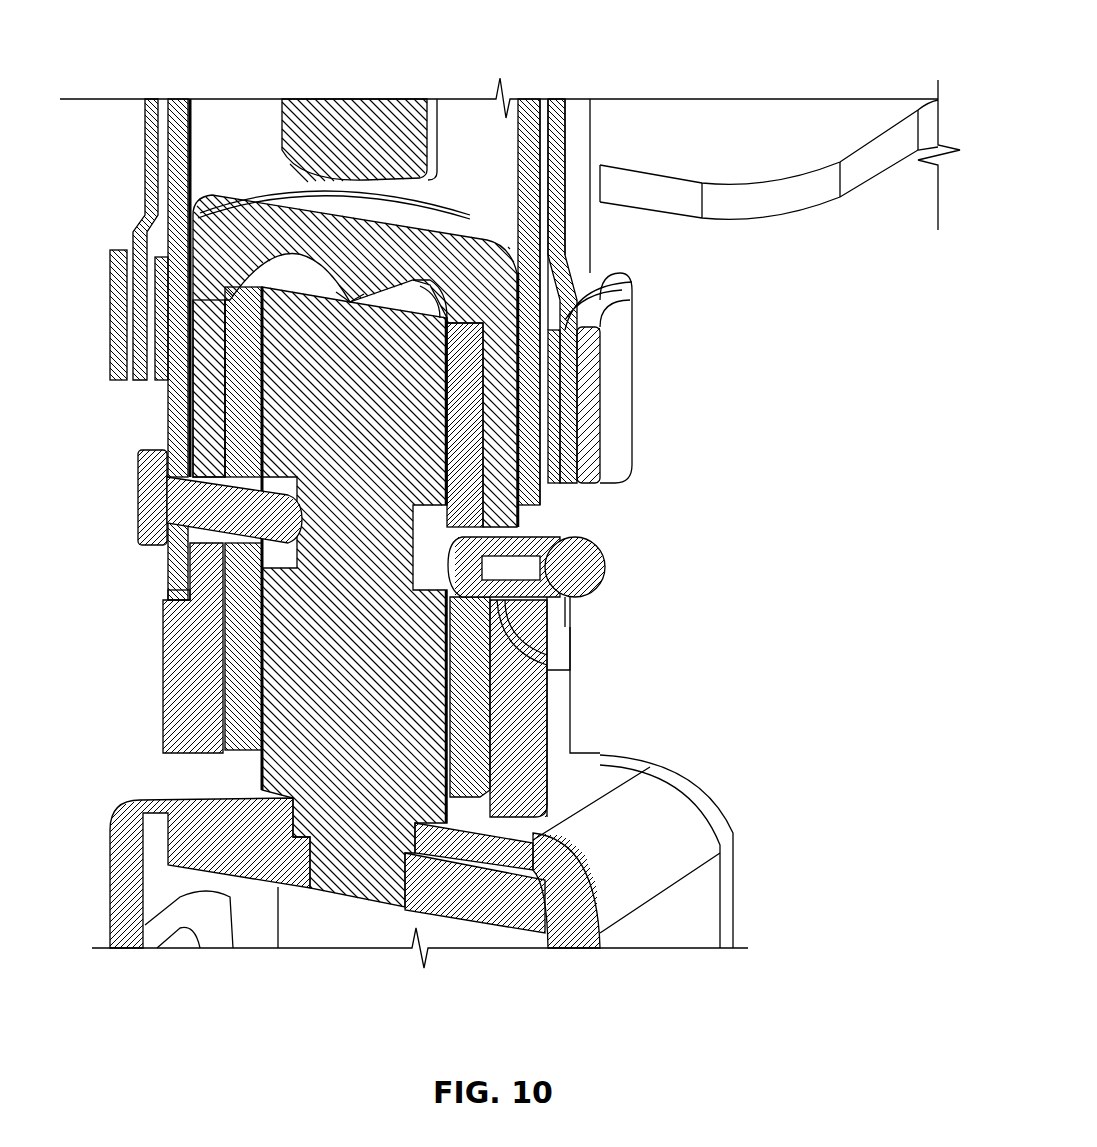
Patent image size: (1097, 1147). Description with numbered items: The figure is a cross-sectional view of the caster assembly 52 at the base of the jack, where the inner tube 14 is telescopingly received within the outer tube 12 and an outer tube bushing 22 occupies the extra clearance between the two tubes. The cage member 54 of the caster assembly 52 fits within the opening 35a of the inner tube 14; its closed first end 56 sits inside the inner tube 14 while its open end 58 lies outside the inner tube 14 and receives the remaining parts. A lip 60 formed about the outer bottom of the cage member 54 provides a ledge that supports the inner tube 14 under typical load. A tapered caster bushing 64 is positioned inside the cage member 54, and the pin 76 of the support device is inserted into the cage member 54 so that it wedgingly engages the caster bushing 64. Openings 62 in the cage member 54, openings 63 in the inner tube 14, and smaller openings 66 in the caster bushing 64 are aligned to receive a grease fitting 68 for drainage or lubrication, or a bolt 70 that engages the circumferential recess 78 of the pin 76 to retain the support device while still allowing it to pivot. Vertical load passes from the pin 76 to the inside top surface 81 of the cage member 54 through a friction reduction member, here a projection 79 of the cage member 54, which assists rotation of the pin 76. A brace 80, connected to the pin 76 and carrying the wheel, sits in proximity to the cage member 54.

The outer tube 12 is at (150, 138).
The inner tube 14 is at (175, 167).
The outer tube bushing 22 is at (633, 366).
The opening of the inner tube 35a is at (177, 593).
The caster assembly 52 is at (123, 428).
The cage member 54 is at (203, 410).
The closed first end 56 is at (260, 253).
The open end 58 is at (237, 763).
The lip 60 is at (157, 591).
The openings of the cage member 62 is at (510, 687).
The openings in the inner tube 63 is at (540, 623).
The caster bushing 64 is at (246, 679).
The openings of the caster bushing 66 is at (540, 722).
The grease fitting 68 is at (603, 583).
The bolt 70 is at (150, 497).
The pin 76 is at (347, 883).
The recess 78 is at (283, 190).
The projection 79 is at (352, 300).
The brace 80 is at (467, 843).
The inside top surface 81 is at (435, 297).